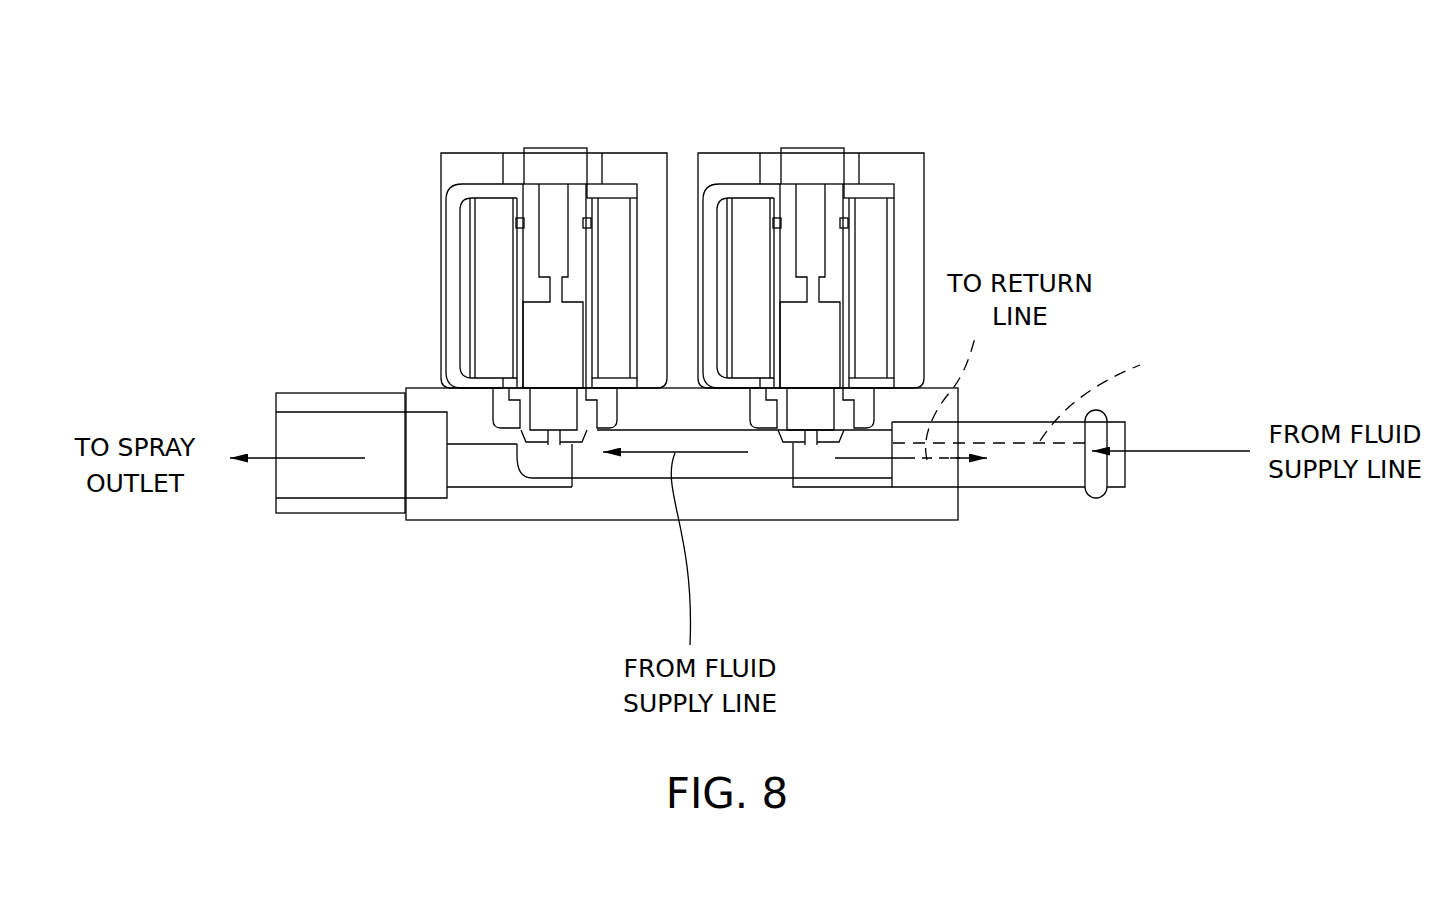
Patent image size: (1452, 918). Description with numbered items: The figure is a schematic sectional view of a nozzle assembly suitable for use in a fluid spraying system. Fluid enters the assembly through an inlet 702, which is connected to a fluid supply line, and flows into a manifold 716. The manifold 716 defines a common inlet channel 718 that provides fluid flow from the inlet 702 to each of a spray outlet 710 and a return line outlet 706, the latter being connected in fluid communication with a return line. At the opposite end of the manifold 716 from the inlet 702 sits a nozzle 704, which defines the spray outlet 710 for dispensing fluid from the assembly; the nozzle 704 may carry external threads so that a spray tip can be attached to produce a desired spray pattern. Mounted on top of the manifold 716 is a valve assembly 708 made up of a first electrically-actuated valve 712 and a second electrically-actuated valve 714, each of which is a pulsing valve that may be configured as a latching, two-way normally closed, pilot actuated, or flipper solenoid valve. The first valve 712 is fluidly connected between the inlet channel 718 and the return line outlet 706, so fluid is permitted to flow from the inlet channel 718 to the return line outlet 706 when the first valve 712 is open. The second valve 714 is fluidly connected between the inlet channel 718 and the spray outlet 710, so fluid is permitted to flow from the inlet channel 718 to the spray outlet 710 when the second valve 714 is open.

The inlet 702 is at (1117, 490).
The nozzle 704 is at (305, 400).
The return line outlet 706 is at (1113, 386).
The valve assembly 708 is at (435, 100).
The spray outlet 710 is at (328, 478).
The first electrically-actuated valve 712 is at (945, 185).
The second electrically-actuated valve 714 is at (428, 210).
The manifold 716 is at (600, 507).
The common inlet channel 718 is at (727, 478).